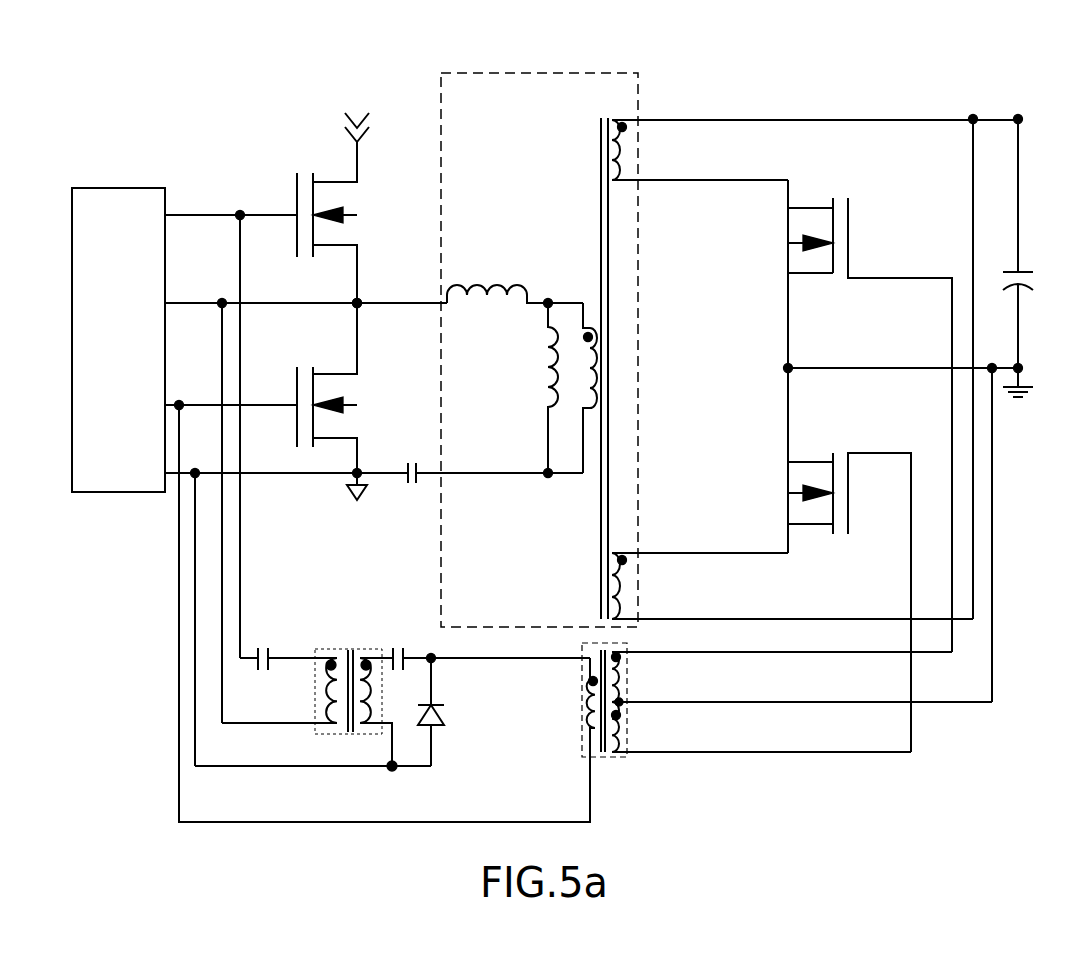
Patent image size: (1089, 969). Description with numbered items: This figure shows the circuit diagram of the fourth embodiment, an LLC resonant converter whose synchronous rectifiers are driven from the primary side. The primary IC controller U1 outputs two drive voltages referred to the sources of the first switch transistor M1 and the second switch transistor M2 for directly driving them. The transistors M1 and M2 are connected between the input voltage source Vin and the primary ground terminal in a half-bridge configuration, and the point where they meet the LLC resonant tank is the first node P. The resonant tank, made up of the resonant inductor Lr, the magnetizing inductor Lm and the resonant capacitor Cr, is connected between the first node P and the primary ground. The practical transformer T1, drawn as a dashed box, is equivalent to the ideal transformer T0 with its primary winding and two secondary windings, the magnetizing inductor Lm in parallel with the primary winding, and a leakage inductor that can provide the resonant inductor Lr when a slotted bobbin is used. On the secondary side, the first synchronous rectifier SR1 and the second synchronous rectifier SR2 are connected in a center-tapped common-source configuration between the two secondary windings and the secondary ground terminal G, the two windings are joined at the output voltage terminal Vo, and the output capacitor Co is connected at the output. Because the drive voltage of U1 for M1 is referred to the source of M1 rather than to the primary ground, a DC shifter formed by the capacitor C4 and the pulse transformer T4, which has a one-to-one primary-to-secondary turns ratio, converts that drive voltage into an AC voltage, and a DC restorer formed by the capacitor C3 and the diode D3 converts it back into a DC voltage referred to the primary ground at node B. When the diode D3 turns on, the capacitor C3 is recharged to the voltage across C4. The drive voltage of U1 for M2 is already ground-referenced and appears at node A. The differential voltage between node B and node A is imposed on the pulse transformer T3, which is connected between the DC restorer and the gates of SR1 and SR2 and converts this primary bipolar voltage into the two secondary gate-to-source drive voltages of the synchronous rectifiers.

The primary IC controller U1 is at (118, 340).
The first switch transistor M1 is at (349, 224).
The second switch transistor M2 is at (349, 401).
The input voltage source Vin is at (358, 134).
The first node P is at (348, 319).
The node A is at (176, 390).
The resonant capacitor Cr is at (487, 459).
The resonant inductor Lr is at (515, 279).
The magnetizing inductor Lm is at (535, 390).
The ideal transformer T0 is at (800, 356).
The practical transformer T1 is at (482, 72).
The first synchronous rectifier SR1 is at (844, 416).
The second synchronous rectifier SR2 is at (823, 560).
The secondary ground terminal G is at (887, 528).
The output voltage terminal Vo is at (1015, 363).
The output capacitor Co is at (1039, 258).
The capacitor C4 is at (288, 645).
The pulse transformer T4 is at (309, 695).
The capacitor C3 is at (486, 645).
The node B is at (427, 640).
The diode D3 is at (319, 712).
The pulse transformer T3 is at (775, 730).